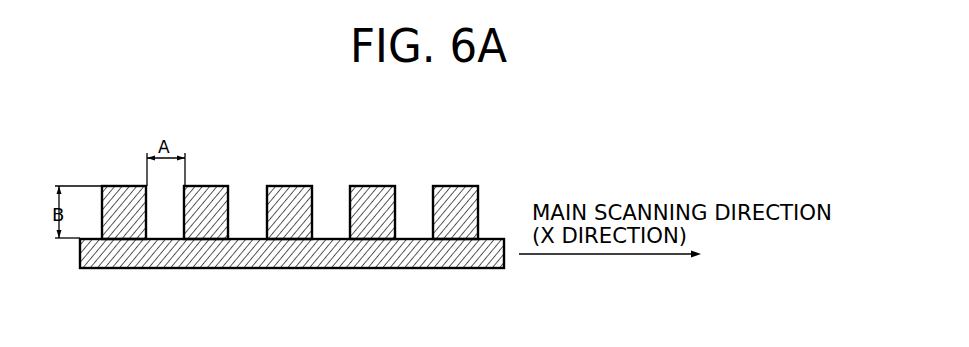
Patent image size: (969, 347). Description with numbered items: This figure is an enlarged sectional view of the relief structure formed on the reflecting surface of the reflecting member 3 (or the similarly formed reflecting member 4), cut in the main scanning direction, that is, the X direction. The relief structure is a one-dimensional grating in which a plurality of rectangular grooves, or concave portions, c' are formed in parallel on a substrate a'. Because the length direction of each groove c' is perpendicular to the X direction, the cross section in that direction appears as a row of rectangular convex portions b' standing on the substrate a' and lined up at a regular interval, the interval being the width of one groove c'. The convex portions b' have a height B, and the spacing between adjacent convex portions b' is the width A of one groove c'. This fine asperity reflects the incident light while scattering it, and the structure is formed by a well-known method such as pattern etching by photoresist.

The reflecting member 3 is at (334, 193).
The reflecting member 4 is at (334, 193).
The substrate a' is at (302, 273).
The convex portion b' is at (287, 192).
The groove (concave portion) c' is at (181, 166).